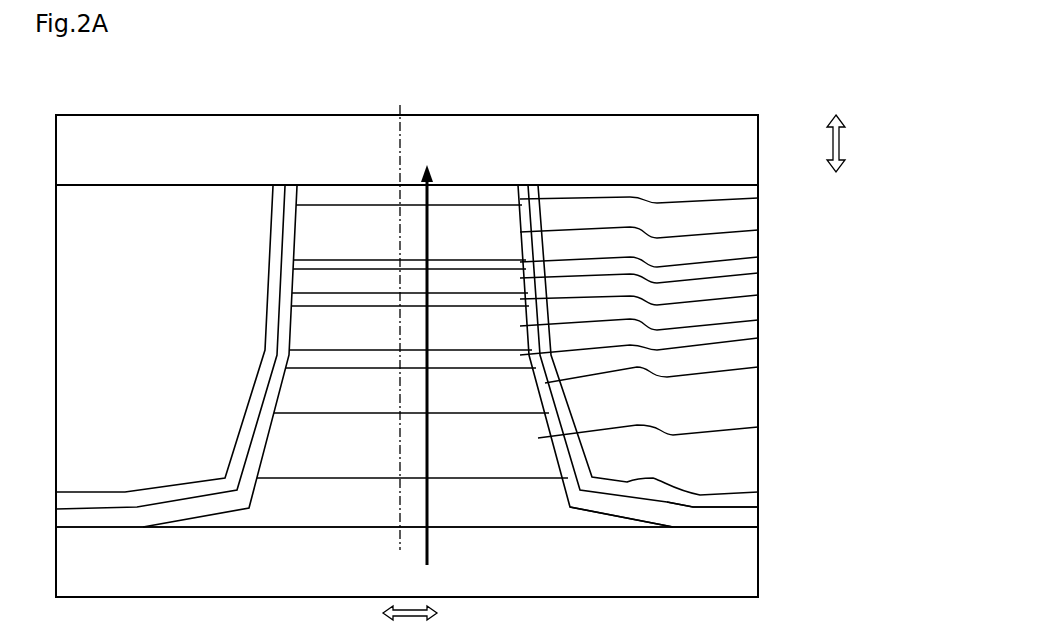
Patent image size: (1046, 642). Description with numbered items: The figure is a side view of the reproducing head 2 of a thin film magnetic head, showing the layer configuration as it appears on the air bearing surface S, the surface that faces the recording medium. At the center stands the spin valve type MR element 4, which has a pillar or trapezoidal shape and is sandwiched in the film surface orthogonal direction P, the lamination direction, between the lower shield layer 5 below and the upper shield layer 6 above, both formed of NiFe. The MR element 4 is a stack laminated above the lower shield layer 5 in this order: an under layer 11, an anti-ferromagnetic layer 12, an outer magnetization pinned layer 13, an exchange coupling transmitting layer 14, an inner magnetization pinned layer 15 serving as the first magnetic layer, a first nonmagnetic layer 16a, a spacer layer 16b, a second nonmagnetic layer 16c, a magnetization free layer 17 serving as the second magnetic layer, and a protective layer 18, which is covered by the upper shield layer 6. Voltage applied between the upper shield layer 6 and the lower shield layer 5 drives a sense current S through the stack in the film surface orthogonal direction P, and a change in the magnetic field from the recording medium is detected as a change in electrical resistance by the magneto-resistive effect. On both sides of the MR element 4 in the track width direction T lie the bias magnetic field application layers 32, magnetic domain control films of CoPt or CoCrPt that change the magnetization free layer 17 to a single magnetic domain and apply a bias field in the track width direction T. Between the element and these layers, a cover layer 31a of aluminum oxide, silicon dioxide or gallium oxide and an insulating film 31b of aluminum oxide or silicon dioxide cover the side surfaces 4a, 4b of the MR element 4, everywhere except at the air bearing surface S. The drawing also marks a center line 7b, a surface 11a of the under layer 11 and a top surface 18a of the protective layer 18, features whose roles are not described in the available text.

The reproducing head 2 is at (400, 78).
The spin valve type MR element 4 is at (860, 197).
The side surface of the MR element 4a is at (290, 325).
The side surface of the MR element 4b is at (523, 390).
The lower shield layer 5 is at (725, 553).
The upper shield layer 6 is at (720, 162).
The center axis of ridge 7b is at (397, 153).
The under layer 11 is at (543, 518).
The surface of n-type layer 11a is at (525, 527).
The anti-ferromagnetic layer 12 is at (758, 427).
The outer magnetization pinned layer 13 is at (758, 367).
The exchange coupling transmitting layer 14 is at (758, 338).
The inner magnetization pinned layer 15 is at (758, 320).
The first nonmagnetic layer 16a is at (758, 295).
The spacer layer 16b is at (758, 273).
The second nonmagnetic layer 16c is at (758, 257).
The magnetization free layer 17 is at (758, 230).
The protective layer 18 is at (758, 198).
The top surface of ridge 18a is at (483, 185).
The cover layer 31a is at (725, 518).
The insulating film 31b is at (725, 500).
The bias magnetic field application layers 32 is at (167, 188).
The air bearing surface S is at (425, 353).
The film surface orthogonal direction P is at (846, 143).
The track width direction T is at (410, 623).